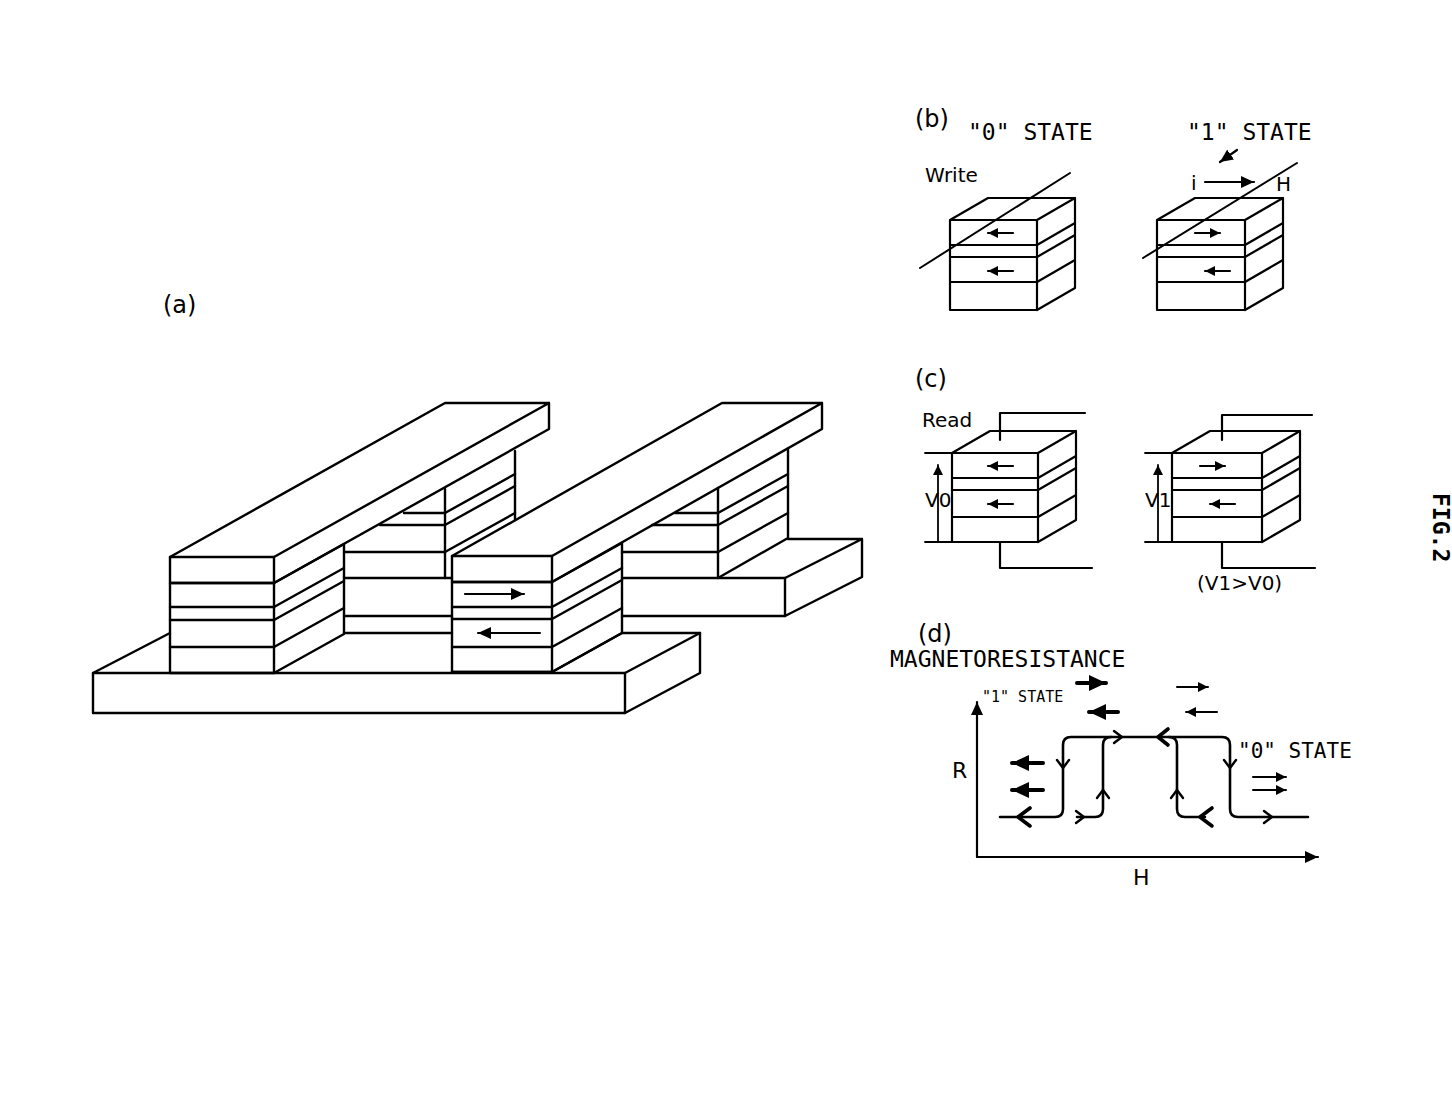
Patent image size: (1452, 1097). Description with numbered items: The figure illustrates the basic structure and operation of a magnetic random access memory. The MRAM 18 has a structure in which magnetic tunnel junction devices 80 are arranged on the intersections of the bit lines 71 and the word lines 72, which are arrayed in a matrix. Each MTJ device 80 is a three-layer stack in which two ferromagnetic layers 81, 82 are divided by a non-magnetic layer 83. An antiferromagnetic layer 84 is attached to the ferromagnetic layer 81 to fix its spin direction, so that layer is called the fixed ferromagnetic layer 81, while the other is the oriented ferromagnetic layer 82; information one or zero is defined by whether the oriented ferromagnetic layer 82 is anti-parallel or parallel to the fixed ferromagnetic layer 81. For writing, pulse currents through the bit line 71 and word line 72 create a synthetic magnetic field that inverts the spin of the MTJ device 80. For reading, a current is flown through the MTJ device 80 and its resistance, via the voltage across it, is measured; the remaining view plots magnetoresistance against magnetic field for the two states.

The MRAM 18 is at (316, 426).
The bit line 71 is at (476, 408).
The word line 72 is at (105, 690).
The magnetic tunnel junction device 80 is at (522, 474).
The fixed ferromagnetic layer 81 is at (570, 620).
The oriented ferromagnetic layer 82 is at (588, 573).
The non-magnetic layer 83 is at (580, 595).
The antiferromagnetic layer 84 is at (573, 642).